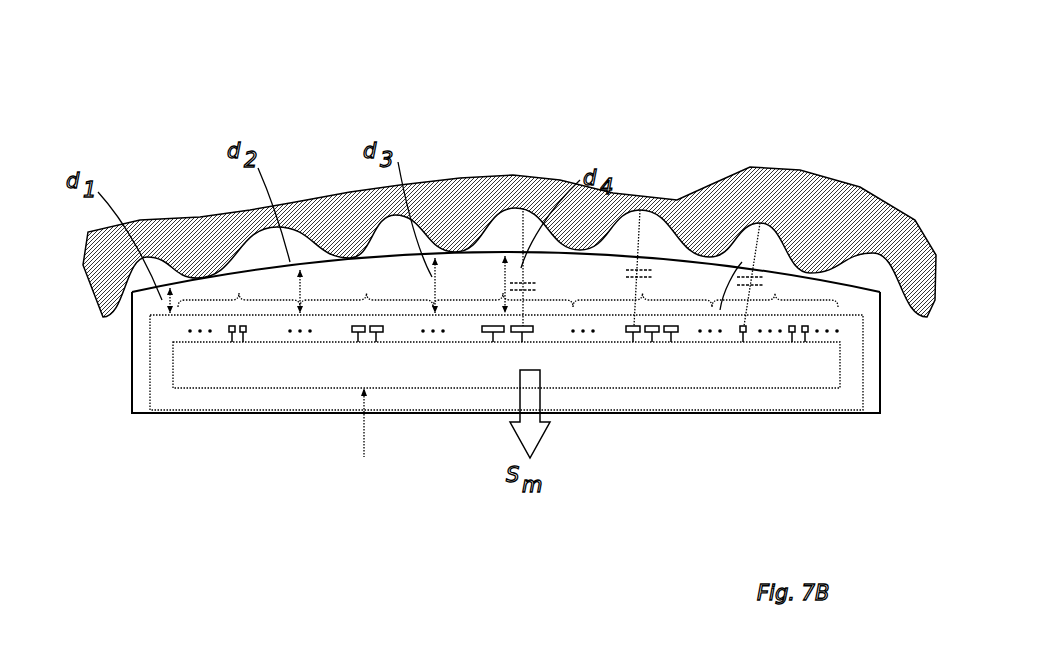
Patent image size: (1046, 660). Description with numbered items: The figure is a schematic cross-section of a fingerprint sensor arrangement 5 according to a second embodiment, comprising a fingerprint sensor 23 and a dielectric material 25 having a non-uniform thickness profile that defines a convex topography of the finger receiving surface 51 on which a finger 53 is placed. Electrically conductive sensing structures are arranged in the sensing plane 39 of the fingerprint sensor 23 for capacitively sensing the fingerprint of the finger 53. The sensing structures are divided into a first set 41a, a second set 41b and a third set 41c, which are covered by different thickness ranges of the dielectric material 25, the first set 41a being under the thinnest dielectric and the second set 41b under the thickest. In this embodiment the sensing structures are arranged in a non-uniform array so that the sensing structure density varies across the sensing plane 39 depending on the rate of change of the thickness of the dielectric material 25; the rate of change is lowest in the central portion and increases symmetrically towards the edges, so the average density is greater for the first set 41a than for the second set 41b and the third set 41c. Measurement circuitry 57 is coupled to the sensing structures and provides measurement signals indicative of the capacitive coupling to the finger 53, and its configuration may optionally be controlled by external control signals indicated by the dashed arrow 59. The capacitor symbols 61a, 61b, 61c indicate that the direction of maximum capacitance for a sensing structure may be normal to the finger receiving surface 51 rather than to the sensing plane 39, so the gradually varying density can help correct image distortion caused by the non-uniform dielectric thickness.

The fingerprint sensor arrangement 5 is at (115, 362).
The fingerprint sensor 23 is at (850, 378).
The dielectric material 25 is at (348, 294).
The sensing surface 39 is at (720, 310).
The first set of sensing structures 41a is at (233, 268).
The second set of sensing structures 41b is at (490, 300).
The third set of sensing structures 41c is at (353, 258).
The finger receiving surface 51 is at (299, 268).
The finger 53 is at (720, 225).
The measurement circuitry 57 is at (680, 375).
The dashed arrow 59 is at (364, 440).
The capacitor symbol 61a is at (750, 298).
The capacitor symbol 61b is at (525, 281).
The capacitor symbol 61c is at (639, 210).